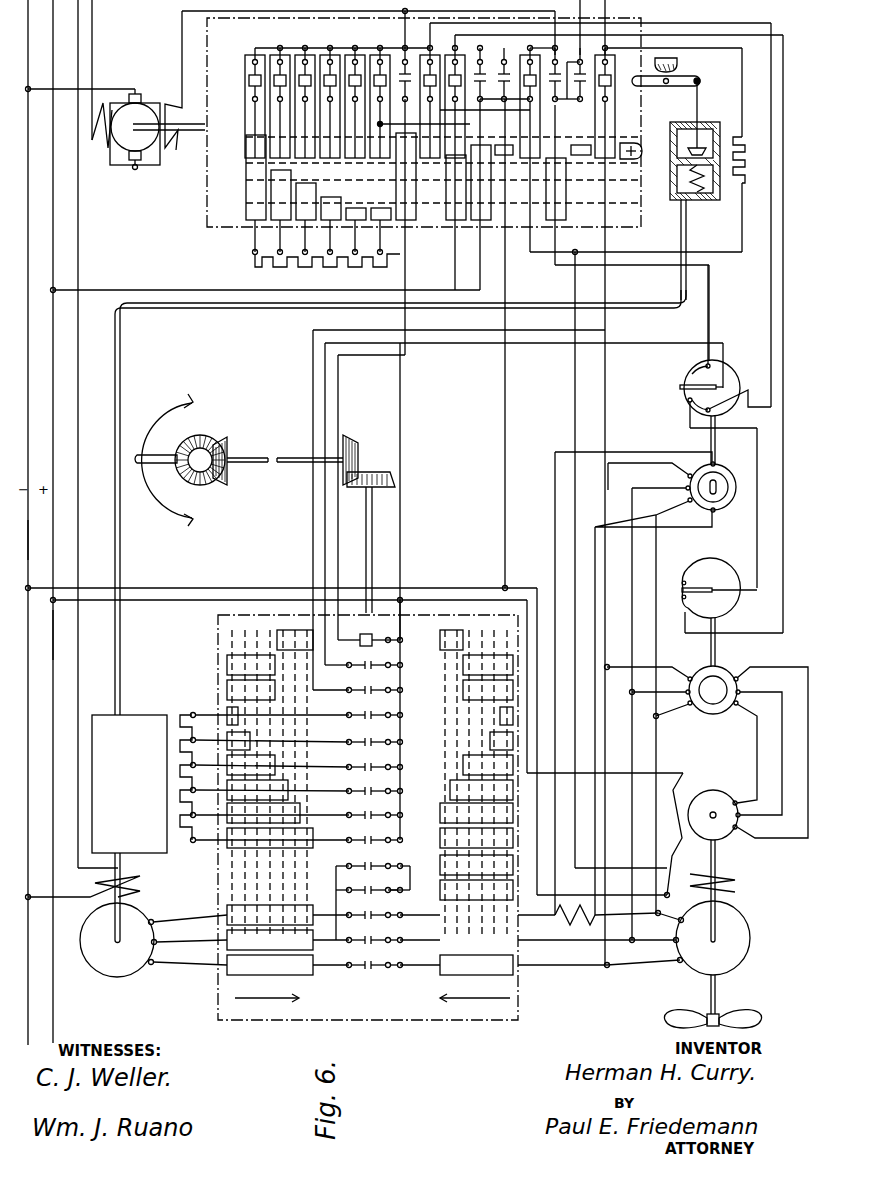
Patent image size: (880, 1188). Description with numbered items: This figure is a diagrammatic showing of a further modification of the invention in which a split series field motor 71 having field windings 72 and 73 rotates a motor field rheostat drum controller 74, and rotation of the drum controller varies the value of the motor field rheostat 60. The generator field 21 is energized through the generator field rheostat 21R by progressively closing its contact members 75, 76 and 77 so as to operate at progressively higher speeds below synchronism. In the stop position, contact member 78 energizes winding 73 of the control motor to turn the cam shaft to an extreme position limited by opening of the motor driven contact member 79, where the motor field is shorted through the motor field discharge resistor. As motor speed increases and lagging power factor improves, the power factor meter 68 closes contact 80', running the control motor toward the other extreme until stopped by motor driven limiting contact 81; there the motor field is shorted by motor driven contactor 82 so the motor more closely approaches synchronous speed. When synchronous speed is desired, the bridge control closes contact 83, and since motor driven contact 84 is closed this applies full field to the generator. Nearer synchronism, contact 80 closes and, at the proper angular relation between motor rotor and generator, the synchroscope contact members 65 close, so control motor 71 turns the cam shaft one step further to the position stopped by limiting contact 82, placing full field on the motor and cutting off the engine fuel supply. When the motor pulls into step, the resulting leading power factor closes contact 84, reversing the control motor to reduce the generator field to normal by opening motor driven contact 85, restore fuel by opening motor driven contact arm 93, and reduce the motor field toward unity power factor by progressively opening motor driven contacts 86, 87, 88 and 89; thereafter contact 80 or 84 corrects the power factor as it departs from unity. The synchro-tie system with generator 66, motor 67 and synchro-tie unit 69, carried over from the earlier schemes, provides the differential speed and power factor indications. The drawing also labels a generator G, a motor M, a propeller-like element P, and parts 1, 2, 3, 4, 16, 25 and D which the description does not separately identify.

The hand crank gear 1 is at (138, 452).
The commutator switch box 2 is at (352, 990).
The commutator segments 3 is at (227, 936).
The resistor 4 is at (518, 870).
The supply line 16 is at (46, 628).
The generator field 21 is at (95, 898).
The supply line 25 is at (30, 542).
The motor field rheostat 60 is at (290, 267).
The synchroscope contact members 65 is at (681, 590).
The synchro-tie generator 66 is at (633, 831).
The synchro-tie motor 67 is at (707, 741).
The power factor meter 68 is at (700, 404).
The synchro-tie unit 69 is at (645, 688).
The split series field motor 71 is at (130, 51).
The field winding 72 is at (98, 148).
The field winding 73 is at (173, 154).
The motor field rheostat drum controller 74 is at (205, 218).
The contact member 75 is at (378, 842).
The contact member 76 is at (378, 817).
The contact member 77 is at (378, 792).
The contact member 78 is at (375, 643).
The motor driven contact member 79 is at (402, 70).
The contact 80 is at (702, 490).
The contact 80' is at (738, 387).
The motor driven limiting contact 81 is at (428, 75).
The motor driven contactor 82 is at (502, 74).
The contact 83 is at (375, 693).
The motor driven contact 84 is at (690, 375).
The motor driven contact 85 is at (611, 76).
The motor driven contact 86 is at (377, 75).
The motor driven contact 87 is at (352, 75).
The motor driven contact 88 is at (327, 75).
The motor driven contact 89 is at (302, 75).
The motor driven contact arm 93 is at (688, 179).
The drive box D is at (150, 715).
The generator field rheostat 21R is at (182, 731).
The generator G is at (92, 974).
The motor M is at (712, 957).
The propeller P is at (680, 1016).